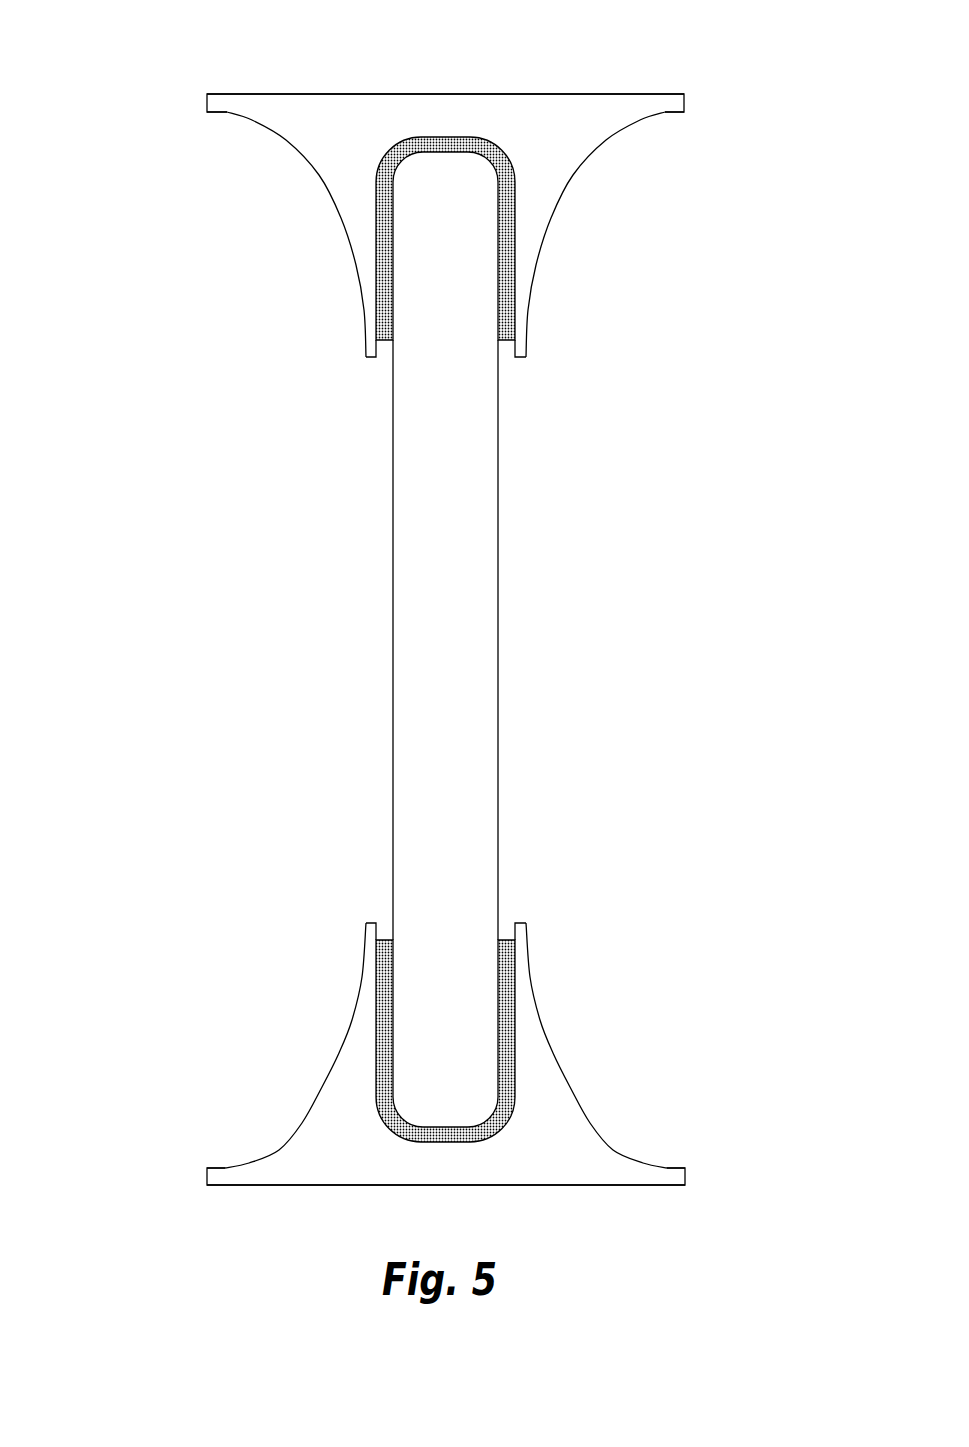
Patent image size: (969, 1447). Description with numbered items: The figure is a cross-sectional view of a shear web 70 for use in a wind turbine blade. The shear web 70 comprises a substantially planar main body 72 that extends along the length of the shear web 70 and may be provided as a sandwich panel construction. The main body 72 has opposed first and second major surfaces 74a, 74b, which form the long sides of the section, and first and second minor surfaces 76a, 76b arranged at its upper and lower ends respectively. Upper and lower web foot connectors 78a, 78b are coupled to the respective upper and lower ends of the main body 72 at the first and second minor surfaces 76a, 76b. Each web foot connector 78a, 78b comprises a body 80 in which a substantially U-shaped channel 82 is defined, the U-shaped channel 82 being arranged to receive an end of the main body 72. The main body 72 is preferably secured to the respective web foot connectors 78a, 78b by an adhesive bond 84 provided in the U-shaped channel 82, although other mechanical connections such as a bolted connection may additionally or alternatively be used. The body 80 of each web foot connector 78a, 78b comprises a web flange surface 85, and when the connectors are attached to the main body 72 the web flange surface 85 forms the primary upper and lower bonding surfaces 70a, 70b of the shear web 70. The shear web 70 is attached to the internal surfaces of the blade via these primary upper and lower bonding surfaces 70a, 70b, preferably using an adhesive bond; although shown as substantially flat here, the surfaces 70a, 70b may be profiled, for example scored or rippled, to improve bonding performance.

The shear web 70 is at (248, 352).
The primary upper bonding surface 70a is at (658, 92).
The primary lower bonding surface 70b is at (338, 1185).
The main body 72 is at (447, 596).
The first major surface 74a is at (392, 462).
The second major surface 74b is at (500, 442).
The first minor surface 76a is at (453, 150).
The second minor surface 76b is at (453, 1128).
The upper web foot connector 78a is at (320, 147).
The lower web foot connector 78b is at (315, 1150).
The body 80 is at (552, 147).
The U-shaped channel 82 is at (513, 284).
The adhesive bond 84 is at (520, 357).
The web flange surface 85 is at (340, 94).